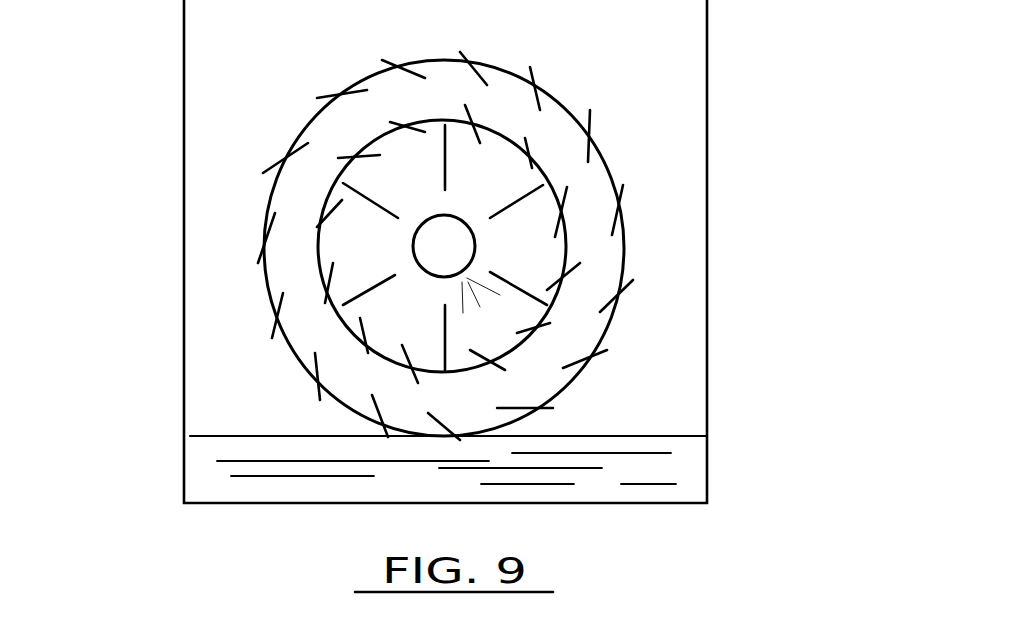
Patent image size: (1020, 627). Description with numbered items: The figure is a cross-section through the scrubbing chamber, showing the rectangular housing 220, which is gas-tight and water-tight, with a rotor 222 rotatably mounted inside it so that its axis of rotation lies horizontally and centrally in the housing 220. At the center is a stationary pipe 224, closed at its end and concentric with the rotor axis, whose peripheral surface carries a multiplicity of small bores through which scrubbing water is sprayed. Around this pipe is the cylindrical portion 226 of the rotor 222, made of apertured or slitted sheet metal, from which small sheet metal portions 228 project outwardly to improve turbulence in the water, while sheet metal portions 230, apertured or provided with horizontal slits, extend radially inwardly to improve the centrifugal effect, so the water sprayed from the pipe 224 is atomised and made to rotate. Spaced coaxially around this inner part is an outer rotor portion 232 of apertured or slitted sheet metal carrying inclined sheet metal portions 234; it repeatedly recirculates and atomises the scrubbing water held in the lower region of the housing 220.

The housing 220 is at (181, 74).
The rotor 222 is at (438, 246).
The stationary pipe 224 is at (460, 246).
The cylindrical portion 226 is at (505, 135).
The sheet metal portions 228 is at (570, 193).
The sheet metal portions 230 is at (448, 318).
The outer rotor portion 232 is at (565, 387).
The sheet metal portions 234 is at (628, 285).